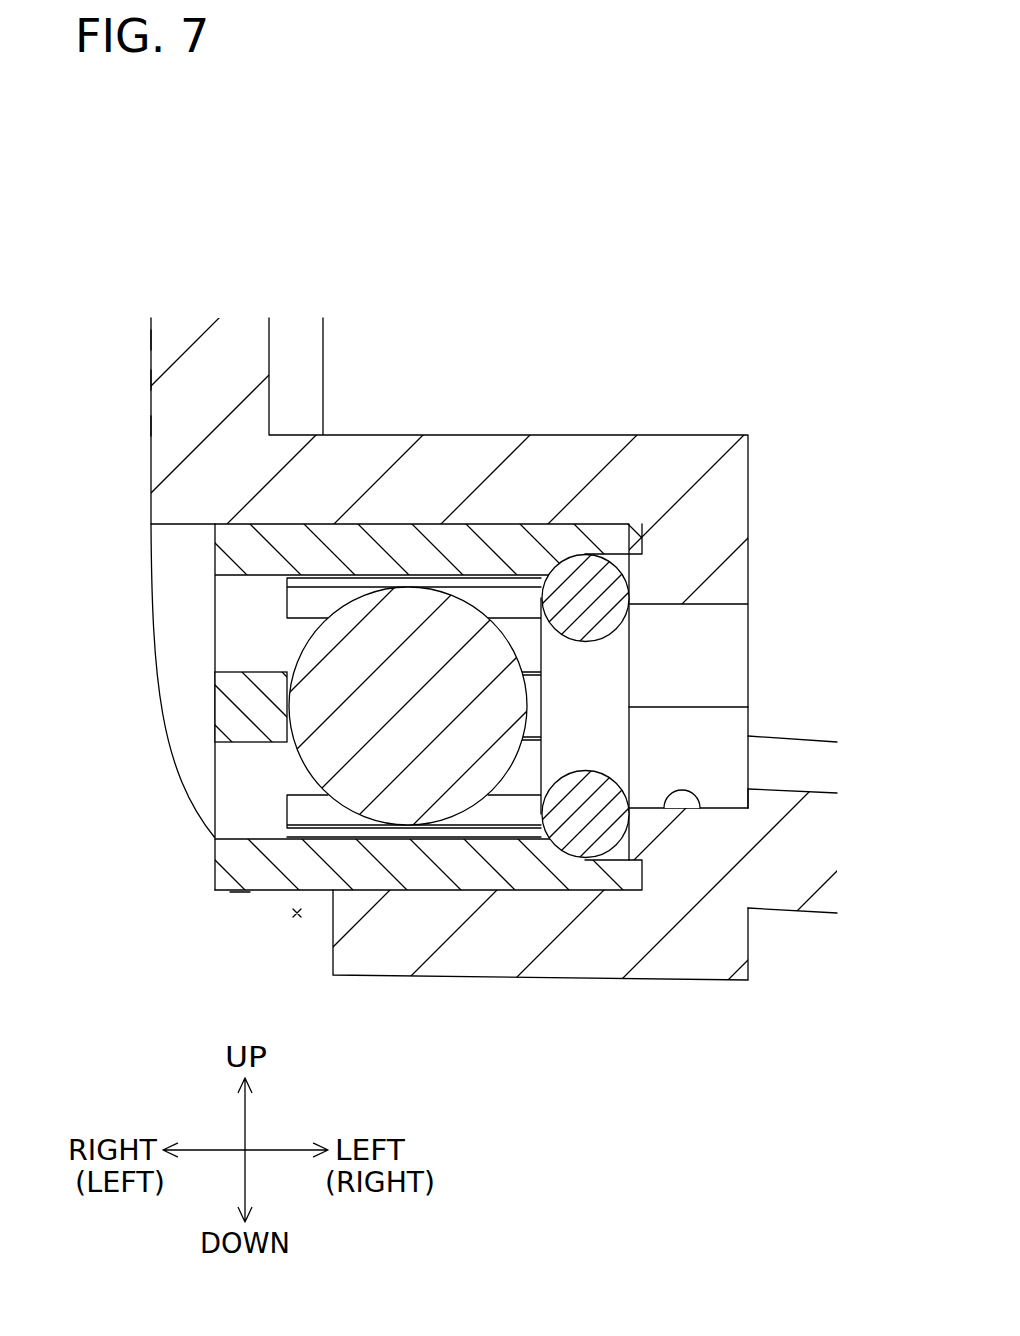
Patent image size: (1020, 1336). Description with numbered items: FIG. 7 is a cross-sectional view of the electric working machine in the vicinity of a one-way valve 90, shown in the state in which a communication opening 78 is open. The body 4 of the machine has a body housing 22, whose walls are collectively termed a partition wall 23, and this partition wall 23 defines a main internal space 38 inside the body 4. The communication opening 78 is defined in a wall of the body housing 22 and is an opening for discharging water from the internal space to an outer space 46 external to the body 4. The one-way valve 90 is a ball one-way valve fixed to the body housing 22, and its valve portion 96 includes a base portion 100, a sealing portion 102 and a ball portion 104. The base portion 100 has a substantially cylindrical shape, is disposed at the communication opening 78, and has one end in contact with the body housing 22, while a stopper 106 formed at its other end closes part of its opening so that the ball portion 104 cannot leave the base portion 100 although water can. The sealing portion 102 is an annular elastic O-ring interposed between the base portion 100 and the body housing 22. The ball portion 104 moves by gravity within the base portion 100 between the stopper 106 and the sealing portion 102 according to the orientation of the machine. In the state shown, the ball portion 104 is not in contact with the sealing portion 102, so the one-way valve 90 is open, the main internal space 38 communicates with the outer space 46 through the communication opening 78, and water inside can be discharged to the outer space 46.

The body 4 is at (132, 324).
The body housing 22 is at (175, 380).
The partition wall 23 is at (165, 426).
The main internal space 38 is at (374, 384).
The one-way valve 90 is at (177, 873).
The valve portion 96 is at (235, 926).
The outer space 46 is at (297, 915).
The base portion 100 is at (522, 873).
The sealing portion 102 is at (580, 843).
The ball portion 104 is at (315, 765).
The stopper 106 is at (223, 713).
The communication opening 78 is at (664, 792).